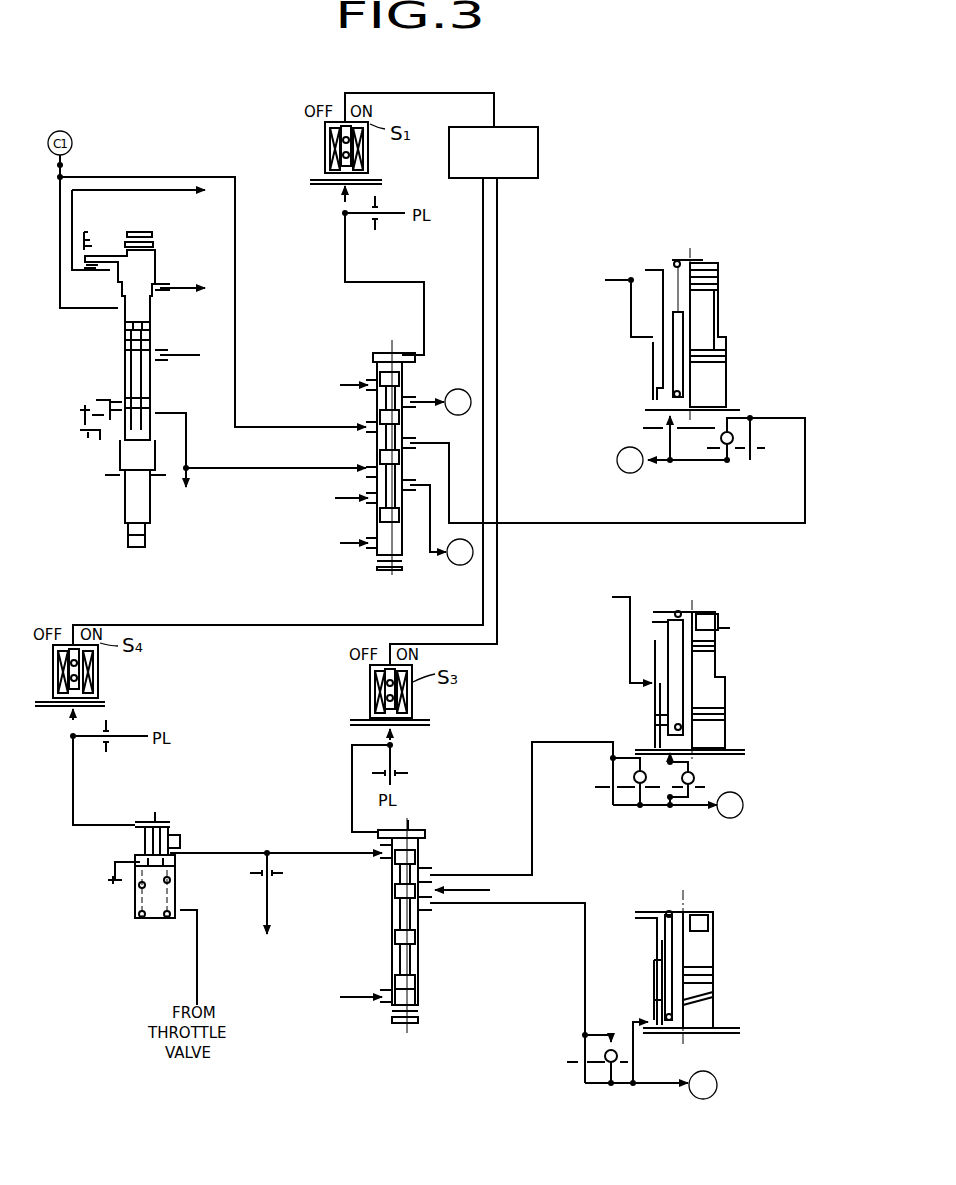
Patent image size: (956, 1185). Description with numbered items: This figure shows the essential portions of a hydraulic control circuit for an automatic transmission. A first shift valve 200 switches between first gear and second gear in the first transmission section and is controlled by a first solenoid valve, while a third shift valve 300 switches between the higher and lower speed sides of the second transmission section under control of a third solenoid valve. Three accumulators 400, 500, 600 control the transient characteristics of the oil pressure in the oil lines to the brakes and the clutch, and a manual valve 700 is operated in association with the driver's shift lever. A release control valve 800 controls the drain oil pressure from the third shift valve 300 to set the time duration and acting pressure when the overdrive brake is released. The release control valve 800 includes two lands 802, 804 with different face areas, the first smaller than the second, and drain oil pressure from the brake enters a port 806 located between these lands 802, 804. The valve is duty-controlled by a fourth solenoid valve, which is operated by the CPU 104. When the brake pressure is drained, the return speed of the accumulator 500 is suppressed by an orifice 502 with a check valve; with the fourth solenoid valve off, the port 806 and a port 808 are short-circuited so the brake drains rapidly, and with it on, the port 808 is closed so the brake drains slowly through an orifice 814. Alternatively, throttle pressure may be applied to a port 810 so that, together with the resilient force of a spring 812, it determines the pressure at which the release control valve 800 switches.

The CPU 104 is at (545, 150).
The 1st shift valve 200 is at (367, 557).
The 3rd shift valve 300 is at (382, 1010).
The accumulator 400 is at (681, 248).
The accumulator 500 is at (622, 703).
The orifice with a check valve 502 is at (678, 808).
The accumulator 600 is at (656, 904).
The manual valve 700 is at (113, 492).
The release control valve 800 is at (223, 884).
The land 802 is at (172, 830).
The land 804 is at (185, 880).
The port 806 is at (183, 858).
The port 808 is at (125, 888).
The port 810 is at (175, 922).
The spring 812 is at (158, 918).
The orifice 814 is at (280, 878).